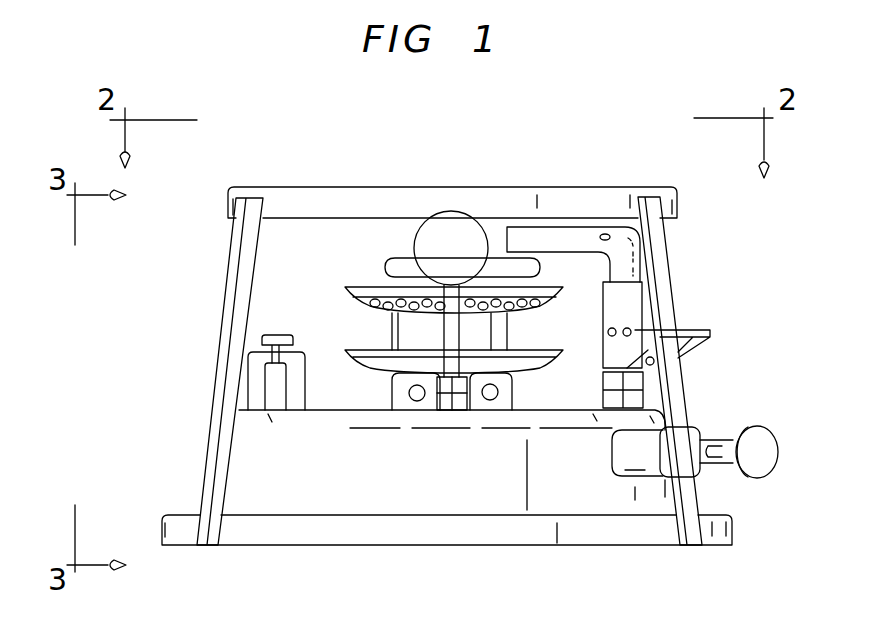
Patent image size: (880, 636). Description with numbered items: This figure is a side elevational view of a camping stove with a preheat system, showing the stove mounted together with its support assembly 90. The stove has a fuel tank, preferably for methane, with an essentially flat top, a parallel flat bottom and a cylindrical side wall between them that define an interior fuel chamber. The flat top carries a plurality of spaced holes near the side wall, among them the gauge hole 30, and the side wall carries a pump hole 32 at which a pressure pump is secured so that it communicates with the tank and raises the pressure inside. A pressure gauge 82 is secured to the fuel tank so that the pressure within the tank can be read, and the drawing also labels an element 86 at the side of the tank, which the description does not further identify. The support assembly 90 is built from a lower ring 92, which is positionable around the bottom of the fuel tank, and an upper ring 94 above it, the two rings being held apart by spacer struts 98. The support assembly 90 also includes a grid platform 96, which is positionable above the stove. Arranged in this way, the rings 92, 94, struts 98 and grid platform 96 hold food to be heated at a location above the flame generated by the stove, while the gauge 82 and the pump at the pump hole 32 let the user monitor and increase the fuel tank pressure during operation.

The upper ring 94 is at (367, 200).
The support assembly 90 is at (668, 228).
The spacer struts 98 is at (662, 307).
The knob 86 is at (770, 442).
The pressure gauge 82 is at (265, 337).
The grid platform 96 is at (222, 368).
The gauge hole 30 is at (273, 410).
The lower ring 92 is at (347, 533).
The pump hole 32 is at (617, 462).